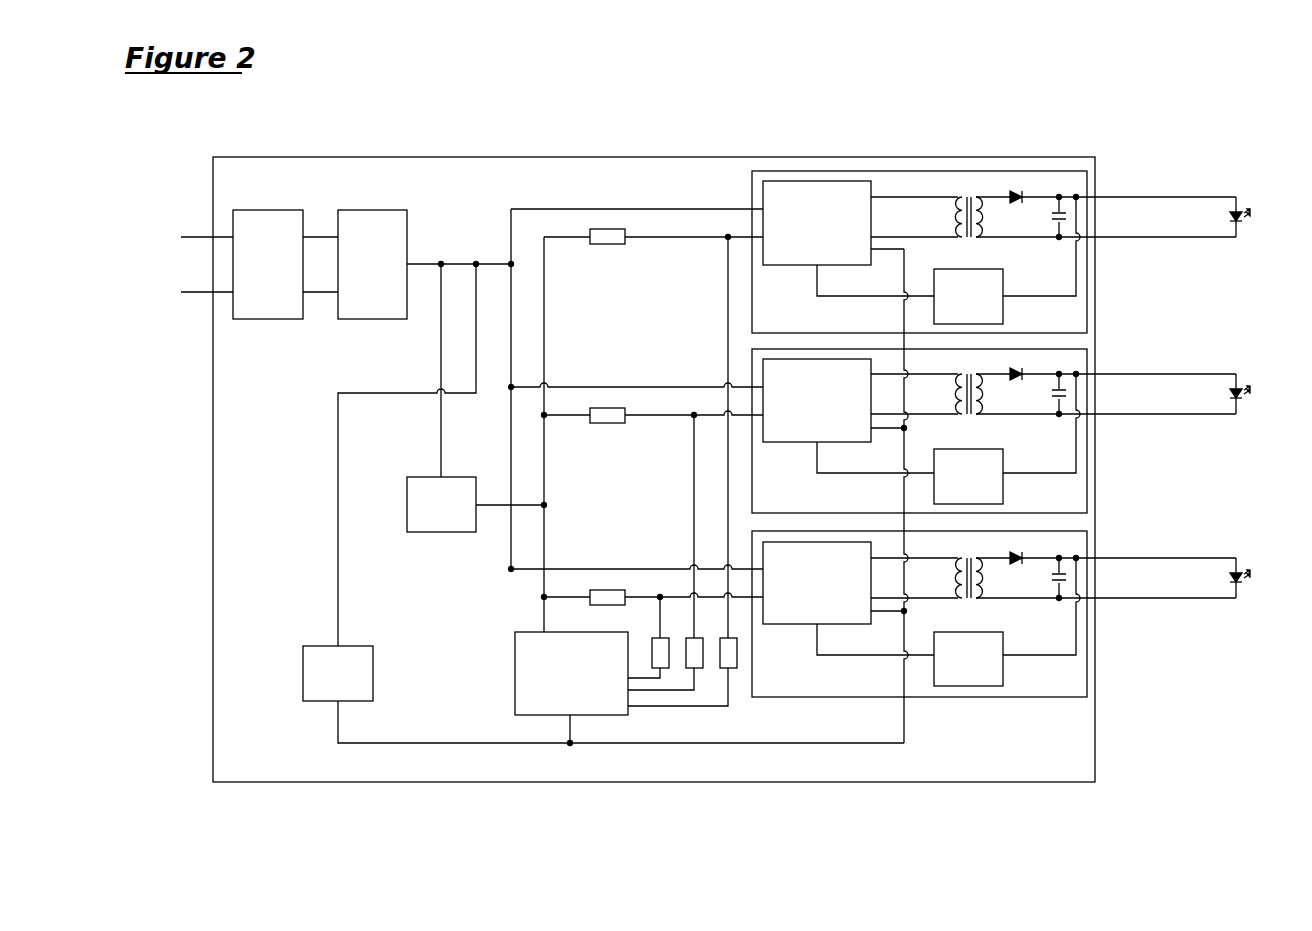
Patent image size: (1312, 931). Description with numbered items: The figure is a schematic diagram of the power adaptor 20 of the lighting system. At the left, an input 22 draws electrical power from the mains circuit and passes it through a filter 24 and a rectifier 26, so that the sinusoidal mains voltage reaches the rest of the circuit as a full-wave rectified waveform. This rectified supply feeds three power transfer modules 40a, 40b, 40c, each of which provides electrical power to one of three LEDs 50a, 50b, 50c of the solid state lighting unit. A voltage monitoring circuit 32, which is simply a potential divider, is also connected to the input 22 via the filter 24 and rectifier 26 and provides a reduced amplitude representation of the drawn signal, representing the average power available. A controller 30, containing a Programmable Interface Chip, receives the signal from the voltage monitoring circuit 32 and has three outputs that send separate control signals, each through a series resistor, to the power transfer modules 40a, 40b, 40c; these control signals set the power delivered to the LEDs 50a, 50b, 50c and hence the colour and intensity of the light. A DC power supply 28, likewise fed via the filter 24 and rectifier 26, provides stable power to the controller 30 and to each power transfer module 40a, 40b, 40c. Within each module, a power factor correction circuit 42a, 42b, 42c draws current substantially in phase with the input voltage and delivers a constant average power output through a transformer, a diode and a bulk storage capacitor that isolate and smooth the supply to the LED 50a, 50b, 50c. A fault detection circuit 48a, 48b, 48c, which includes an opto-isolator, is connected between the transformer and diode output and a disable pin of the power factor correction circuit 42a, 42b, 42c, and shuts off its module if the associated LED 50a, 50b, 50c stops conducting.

The power adaptor 20 is at (412, 163).
The input 22 is at (190, 237).
The filter 24 is at (284, 277).
The rectifier 26 is at (389, 277).
The DC power supply 28 is at (354, 686).
The controller 30 is at (587, 684).
The voltage monitoring circuit 32 is at (458, 517).
The power transfer module 40a is at (1070, 314).
The power transfer module 40b is at (1070, 500).
The power transfer module 40c is at (1070, 680).
The power factor correction circuit 42a is at (838, 232).
The power factor correction circuit 42b is at (838, 412).
The power factor correction circuit 42c is at (838, 595).
The fault detection circuit 48a is at (989, 308).
The fault detection circuit 48b is at (989, 490).
The fault detection circuit 48c is at (989, 671).
The LED 50a is at (1241, 210).
The LED 50b is at (1241, 388).
The LED 50c is at (1241, 578).